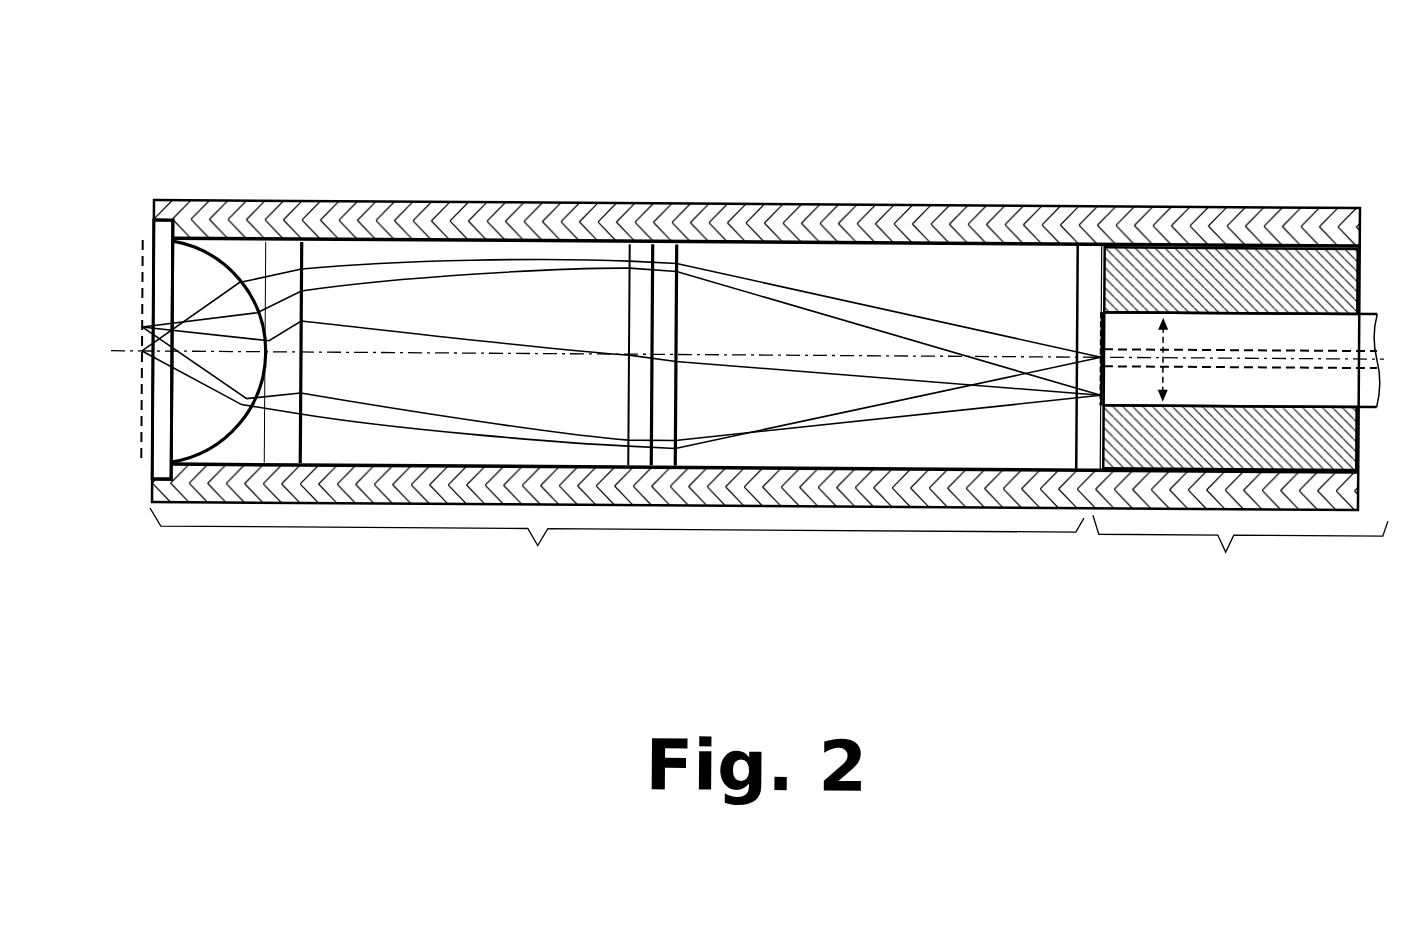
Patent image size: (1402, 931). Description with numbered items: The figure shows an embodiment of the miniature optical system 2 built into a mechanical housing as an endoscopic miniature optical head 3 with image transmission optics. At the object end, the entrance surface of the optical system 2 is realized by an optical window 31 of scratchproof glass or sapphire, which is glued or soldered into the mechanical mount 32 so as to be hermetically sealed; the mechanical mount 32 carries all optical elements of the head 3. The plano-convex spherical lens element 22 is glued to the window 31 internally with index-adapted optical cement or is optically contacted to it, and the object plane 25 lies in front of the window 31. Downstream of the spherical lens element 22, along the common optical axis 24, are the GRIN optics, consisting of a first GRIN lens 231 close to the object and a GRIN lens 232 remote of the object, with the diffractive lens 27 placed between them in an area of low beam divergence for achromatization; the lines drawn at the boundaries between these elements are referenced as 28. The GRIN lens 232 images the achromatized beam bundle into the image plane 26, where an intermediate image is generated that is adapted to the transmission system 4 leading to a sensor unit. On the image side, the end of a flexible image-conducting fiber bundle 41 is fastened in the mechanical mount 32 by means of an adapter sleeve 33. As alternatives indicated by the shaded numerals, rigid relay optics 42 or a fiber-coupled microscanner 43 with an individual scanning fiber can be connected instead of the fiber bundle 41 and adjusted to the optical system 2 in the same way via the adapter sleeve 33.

The miniature optical system 2 is at (540, 546).
The miniature optical head 3 is at (370, 554).
The transmission system 4 is at (1228, 547).
The plano-convex spherical lens element 22 is at (198, 250).
The optical axis 24 is at (855, 348).
The object plane 25 is at (143, 470).
The image plane 26 is at (1102, 399).
The diffractive lens 27 is at (640, 247).
The spacer 28 is at (287, 247).
The optical window 31 is at (162, 222).
The mechanical mount 32 is at (1003, 217).
The adapter sleeve 33 is at (1330, 273).
The image-conducting fiber bundle 41 is at (1207, 316).
The rigid relay optics 42 is at (1307, 393).
The fiber-coupled microscanner 43 is at (1165, 361).
The first GRIN lens 231 is at (472, 247).
The GRIN lens remote of the object 232 is at (875, 244).